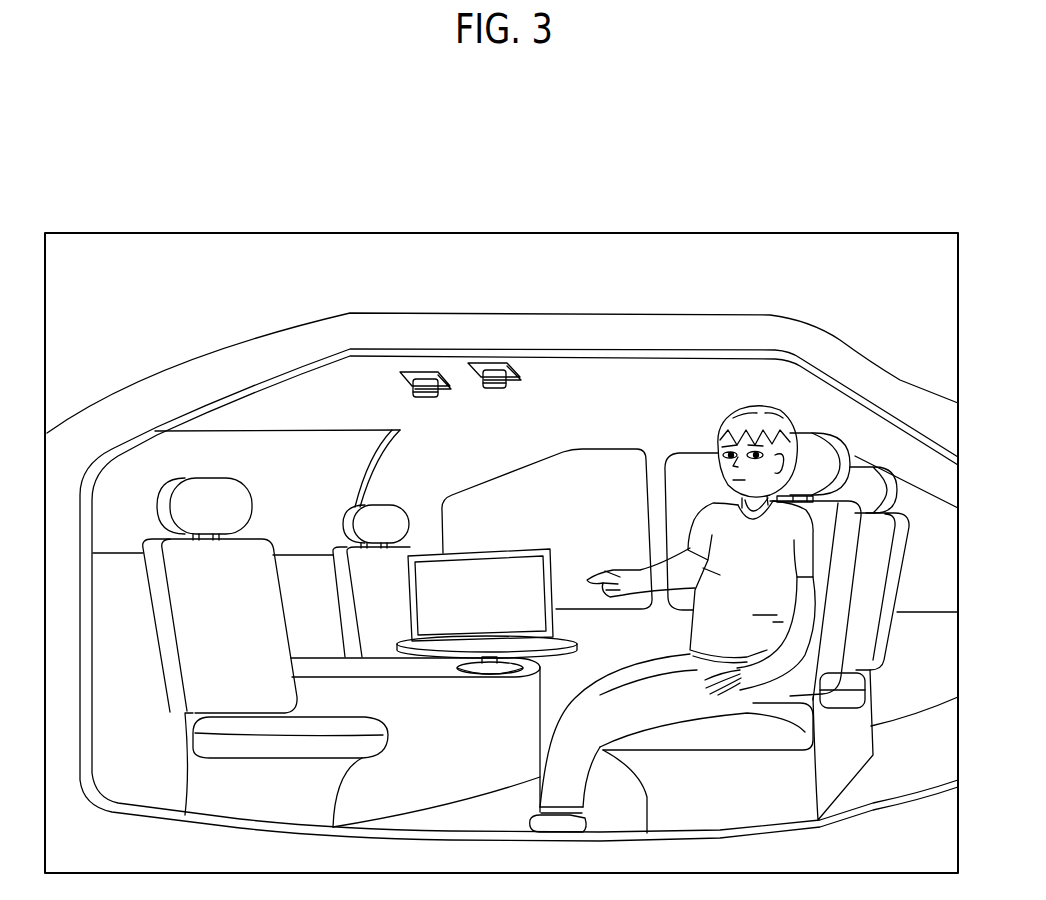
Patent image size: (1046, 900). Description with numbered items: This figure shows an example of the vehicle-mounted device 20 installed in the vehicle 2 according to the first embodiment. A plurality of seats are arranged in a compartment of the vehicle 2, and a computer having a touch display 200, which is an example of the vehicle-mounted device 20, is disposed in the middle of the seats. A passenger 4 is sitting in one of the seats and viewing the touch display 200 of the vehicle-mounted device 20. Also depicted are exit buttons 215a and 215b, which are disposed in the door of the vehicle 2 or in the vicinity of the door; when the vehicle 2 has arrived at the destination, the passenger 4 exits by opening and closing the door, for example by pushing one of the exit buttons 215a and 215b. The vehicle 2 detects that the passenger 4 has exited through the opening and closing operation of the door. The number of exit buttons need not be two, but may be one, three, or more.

The vehicle 2 is at (162, 388).
The passenger 4 is at (728, 411).
The vehicle-mounted device 20 is at (515, 552).
The touch display 200 is at (538, 577).
The exit button 215a is at (423, 397).
The exit button 215b is at (494, 388).